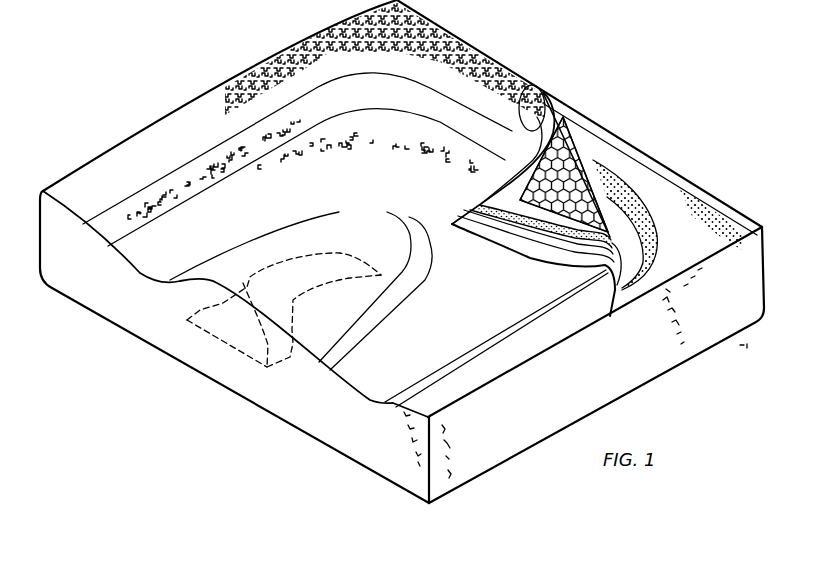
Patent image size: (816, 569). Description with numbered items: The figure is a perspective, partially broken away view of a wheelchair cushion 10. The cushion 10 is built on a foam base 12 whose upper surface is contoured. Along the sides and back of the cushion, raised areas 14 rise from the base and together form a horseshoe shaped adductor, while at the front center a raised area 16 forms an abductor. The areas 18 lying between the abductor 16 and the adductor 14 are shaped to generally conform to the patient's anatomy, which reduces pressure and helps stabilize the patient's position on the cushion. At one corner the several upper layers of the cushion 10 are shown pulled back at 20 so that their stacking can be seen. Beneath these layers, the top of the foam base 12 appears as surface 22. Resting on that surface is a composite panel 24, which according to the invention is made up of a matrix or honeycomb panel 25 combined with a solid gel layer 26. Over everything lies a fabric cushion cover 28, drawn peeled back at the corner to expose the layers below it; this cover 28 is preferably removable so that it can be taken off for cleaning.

The wheelchair cushion 10 is at (128, 358).
The foam base 12 is at (359, 452).
The raised areas 14 is at (200, 110).
The front center raised area 16 is at (230, 350).
The areas between abductor and adductor 18 is at (147, 252).
The pulled back corner 20 is at (727, 178).
The surface 22 is at (670, 195).
The composite panel 24 is at (579, 149).
The honeycomb panel 25 is at (593, 160).
The solid gel layer 26 is at (540, 230).
The fabric cushion cover 28 is at (531, 85).